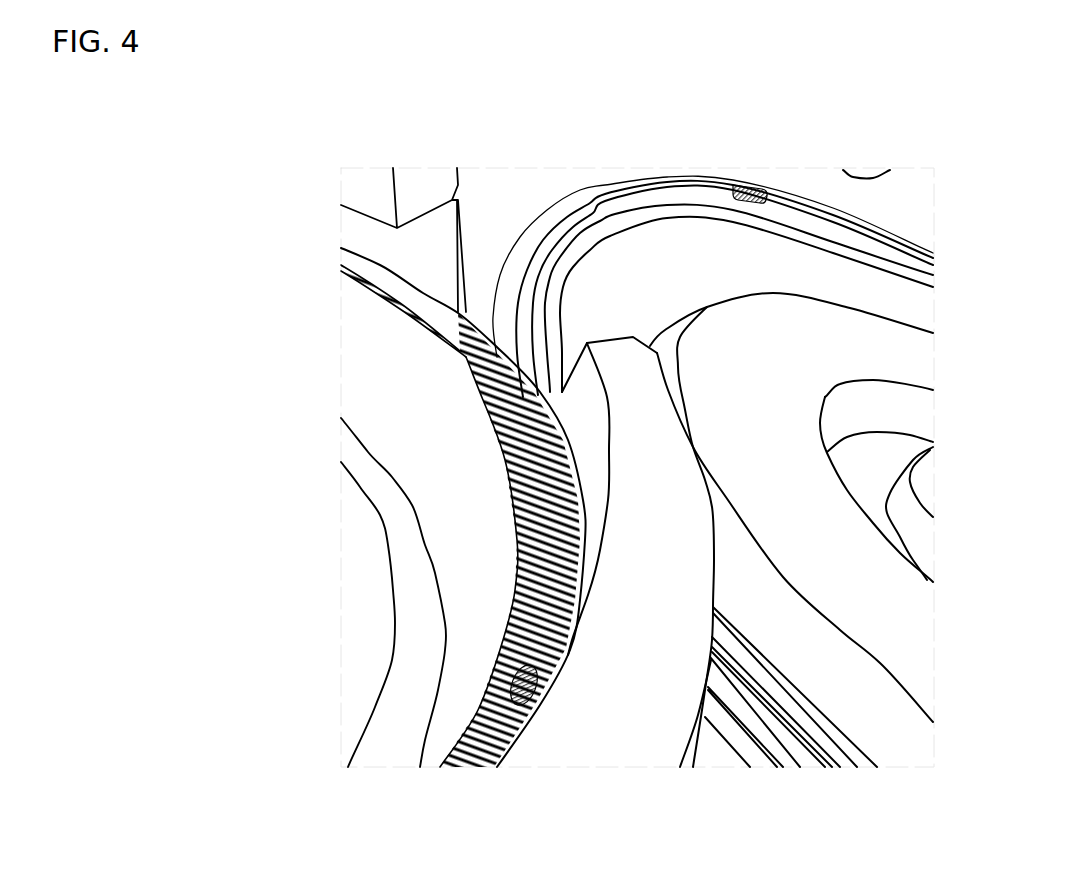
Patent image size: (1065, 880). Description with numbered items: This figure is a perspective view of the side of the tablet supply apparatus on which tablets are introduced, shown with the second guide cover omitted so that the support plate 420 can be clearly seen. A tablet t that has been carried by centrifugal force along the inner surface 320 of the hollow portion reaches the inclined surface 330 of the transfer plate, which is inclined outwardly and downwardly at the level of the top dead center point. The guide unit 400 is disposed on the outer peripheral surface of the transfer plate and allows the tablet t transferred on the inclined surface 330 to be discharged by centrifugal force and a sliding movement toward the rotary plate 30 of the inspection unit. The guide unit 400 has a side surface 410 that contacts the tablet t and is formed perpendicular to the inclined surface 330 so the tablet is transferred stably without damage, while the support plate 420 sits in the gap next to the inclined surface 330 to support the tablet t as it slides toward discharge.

The rotary plate of inspection unit 30 is at (562, 262).
The tablet t is at (505, 663).
The inner surface 320 is at (480, 566).
The inclined surface 330 is at (470, 381).
The guide unit 400 is at (673, 540).
The side surface 410 is at (597, 407).
The support plate 420 is at (560, 411).